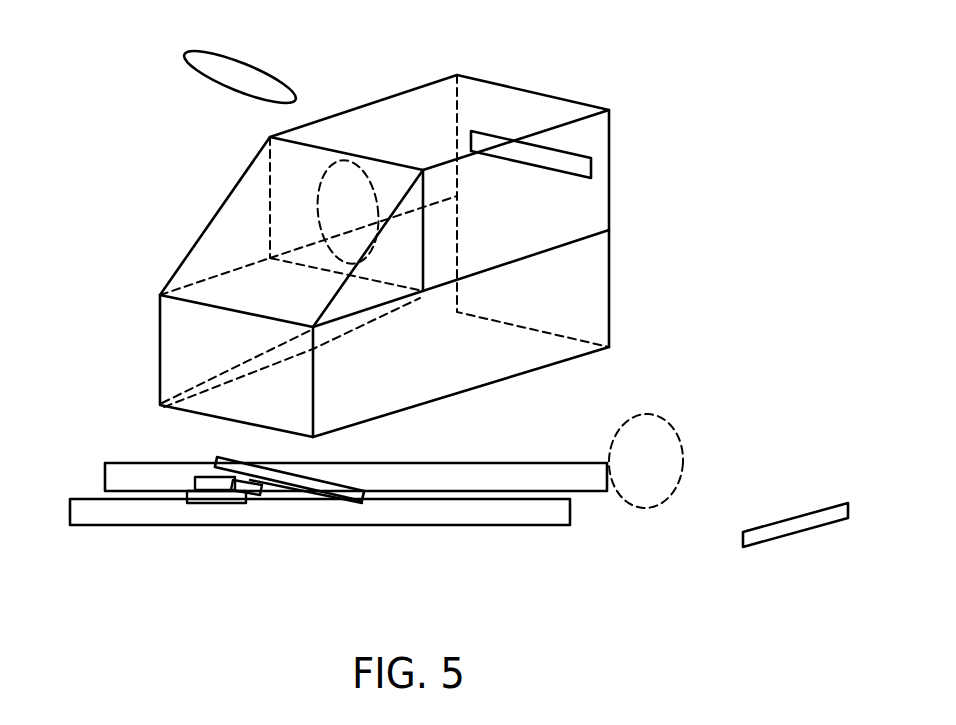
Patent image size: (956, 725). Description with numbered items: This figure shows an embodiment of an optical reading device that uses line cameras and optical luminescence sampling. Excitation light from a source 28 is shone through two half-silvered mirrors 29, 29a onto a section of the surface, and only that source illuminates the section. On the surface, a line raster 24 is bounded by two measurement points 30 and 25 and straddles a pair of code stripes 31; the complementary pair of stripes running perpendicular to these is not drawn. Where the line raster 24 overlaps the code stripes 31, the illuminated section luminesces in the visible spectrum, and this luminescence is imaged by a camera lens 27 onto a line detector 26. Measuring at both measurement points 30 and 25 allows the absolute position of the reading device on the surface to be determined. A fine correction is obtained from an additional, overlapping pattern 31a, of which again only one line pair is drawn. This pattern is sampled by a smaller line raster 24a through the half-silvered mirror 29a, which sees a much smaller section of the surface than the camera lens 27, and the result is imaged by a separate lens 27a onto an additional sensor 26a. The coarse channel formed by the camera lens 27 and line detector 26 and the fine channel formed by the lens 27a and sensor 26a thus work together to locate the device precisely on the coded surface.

The line raster 24 is at (336, 512).
The smaller line raster 24a is at (248, 496).
The measurement point 25 is at (366, 500).
The line detector 26 is at (525, 164).
The additional sensor 26a is at (795, 513).
The camera lens 27 is at (320, 172).
The lens 27a is at (658, 414).
The source 28 is at (247, 63).
The half-silvered mirror 29 is at (208, 221).
The half-silvered mirror 29a is at (233, 368).
The measurement point 30 is at (218, 460).
The code stripes 31 is at (105, 479).
The overlapping pattern 31a is at (220, 490).